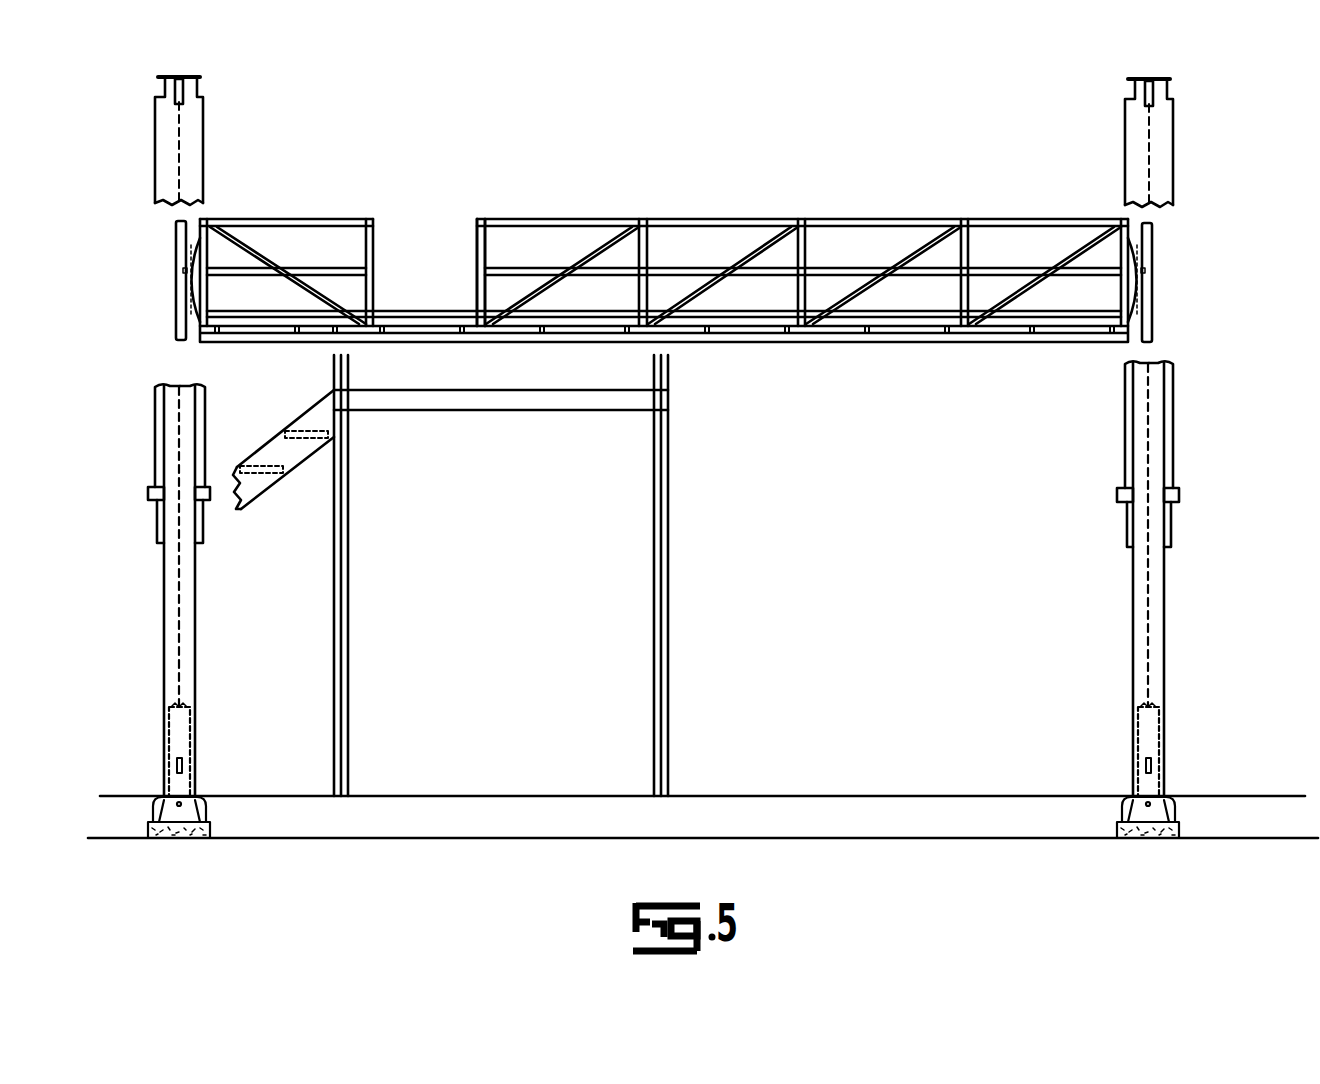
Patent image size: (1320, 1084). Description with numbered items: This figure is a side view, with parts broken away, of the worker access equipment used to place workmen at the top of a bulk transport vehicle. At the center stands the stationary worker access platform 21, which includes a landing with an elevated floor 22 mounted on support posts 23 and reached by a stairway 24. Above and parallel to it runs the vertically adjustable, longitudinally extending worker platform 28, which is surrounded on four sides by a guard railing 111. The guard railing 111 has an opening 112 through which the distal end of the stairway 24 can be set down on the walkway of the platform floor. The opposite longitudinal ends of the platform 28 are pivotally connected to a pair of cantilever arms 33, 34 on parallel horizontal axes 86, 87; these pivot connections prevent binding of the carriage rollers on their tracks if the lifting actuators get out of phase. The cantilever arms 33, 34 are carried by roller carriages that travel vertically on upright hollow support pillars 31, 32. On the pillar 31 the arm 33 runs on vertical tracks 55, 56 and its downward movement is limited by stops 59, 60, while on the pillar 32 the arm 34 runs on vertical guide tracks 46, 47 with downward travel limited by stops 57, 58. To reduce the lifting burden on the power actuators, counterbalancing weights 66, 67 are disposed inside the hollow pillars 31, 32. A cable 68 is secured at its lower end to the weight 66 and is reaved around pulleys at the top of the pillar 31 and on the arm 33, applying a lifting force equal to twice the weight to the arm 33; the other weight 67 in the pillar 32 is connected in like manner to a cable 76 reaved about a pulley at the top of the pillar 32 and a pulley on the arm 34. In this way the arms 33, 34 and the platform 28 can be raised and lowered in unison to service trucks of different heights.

The guard railing 111 is at (725, 218).
The opening 112 is at (477, 238).
The worker platform 28 is at (860, 341).
The cantilever arm 33 is at (177, 236).
The cantilever arm 34 is at (1153, 236).
The horizontal axis 86 is at (196, 281).
The horizontal axis 87 is at (1134, 280).
The support pillar 31 is at (197, 586).
The support pillar 32 is at (1165, 667).
The cable 68 is at (188, 660).
The cable 76 is at (1156, 636).
The counterbalancing weight 66 is at (186, 741).
The counterbalancing weight 67 is at (1156, 740).
The vertical track 55 is at (155, 462).
The vertical track 56 is at (205, 462).
The stop 59 is at (150, 493).
The stop 60 is at (210, 498).
The vertical guide track 47 is at (1126, 447).
The vertical guide track 46 is at (1173, 375).
The stop 57 is at (1119, 494).
The stop 58 is at (1178, 494).
The stationary worker access platform 21 is at (522, 575).
The floor 22 is at (432, 390).
The support post 23 is at (348, 592).
The stairway 24 is at (300, 466).